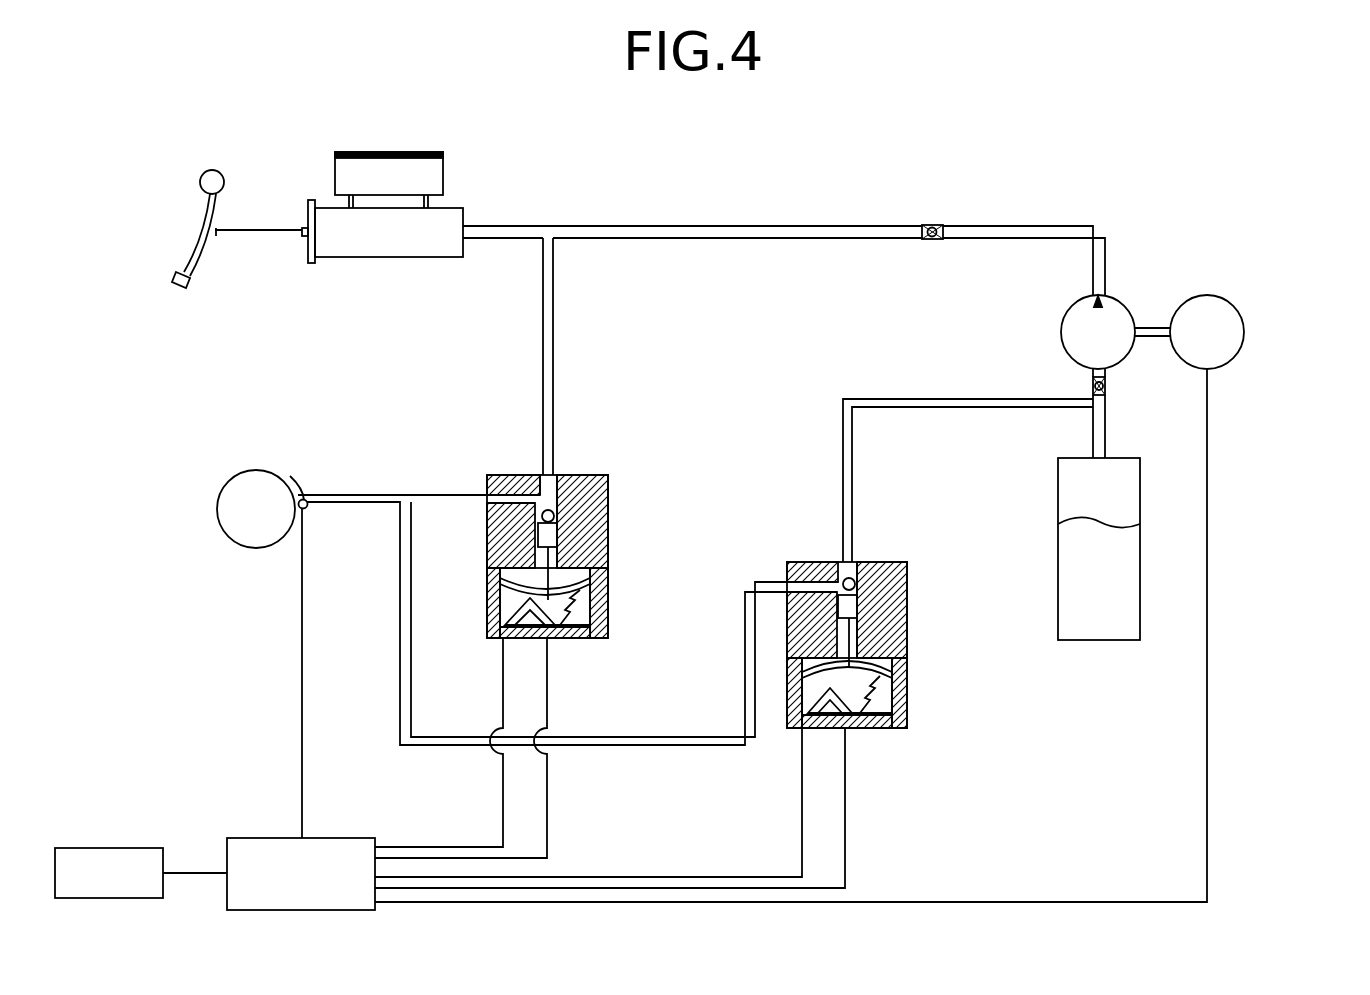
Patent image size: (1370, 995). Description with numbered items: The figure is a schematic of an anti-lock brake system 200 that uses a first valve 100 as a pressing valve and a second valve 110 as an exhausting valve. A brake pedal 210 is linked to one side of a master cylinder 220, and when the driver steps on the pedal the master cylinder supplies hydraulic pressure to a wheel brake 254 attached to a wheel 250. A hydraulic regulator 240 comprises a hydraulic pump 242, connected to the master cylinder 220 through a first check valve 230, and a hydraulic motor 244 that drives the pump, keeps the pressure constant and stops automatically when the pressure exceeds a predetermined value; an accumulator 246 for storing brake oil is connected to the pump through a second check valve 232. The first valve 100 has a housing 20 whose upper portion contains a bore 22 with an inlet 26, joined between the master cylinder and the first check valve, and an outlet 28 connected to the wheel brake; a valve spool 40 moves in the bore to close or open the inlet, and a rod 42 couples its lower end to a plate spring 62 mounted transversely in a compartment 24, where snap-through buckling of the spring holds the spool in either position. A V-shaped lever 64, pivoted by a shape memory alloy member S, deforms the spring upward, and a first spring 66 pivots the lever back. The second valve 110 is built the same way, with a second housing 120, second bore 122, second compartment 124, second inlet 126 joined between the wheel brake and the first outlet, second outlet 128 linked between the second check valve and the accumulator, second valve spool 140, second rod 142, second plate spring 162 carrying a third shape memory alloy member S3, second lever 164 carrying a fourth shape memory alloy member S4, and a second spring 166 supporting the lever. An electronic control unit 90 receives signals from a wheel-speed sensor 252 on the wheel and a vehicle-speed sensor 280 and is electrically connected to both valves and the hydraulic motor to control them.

The housing 20 is at (608, 478).
The bore 22 is at (585, 475).
The compartment 24 is at (590, 580).
The inlet 26 is at (532, 476).
The outlet 28 is at (505, 497).
The valve spool 40 is at (560, 525).
The rod 42 is at (500, 585).
The plate spring 62 is at (600, 598).
The V-shaped lever 64 is at (520, 645).
The first spring 66 is at (590, 635).
The solenoid S is at (570, 640).
The fourth shape memory alloy member S4 is at (490, 612).
The third shape memory alloy member S3 is at (895, 730).
The electronic control unit 90 is at (260, 840).
The first valve 100 is at (542, 620).
The second valve 110 is at (968, 480).
The second housing 120 is at (910, 570).
The second bore 122 is at (905, 590).
The second compartment 124 is at (905, 690).
The second inlet 126 is at (812, 588).
The second outlet 128 is at (856, 574).
The second valve spool 140 is at (858, 612).
The second rod 142 is at (858, 645).
The second plate spring 162 is at (785, 725).
The second lever 164 is at (855, 730).
The second spring 166 is at (905, 705).
The anti-lock brake system 200 is at (382, 170).
The brake pedal 210 is at (205, 200).
The master cylinder 220 is at (442, 182).
The first check valve 230 is at (930, 225).
The second check valve 232 is at (1108, 398).
The hydraulic regulator 240 is at (1215, 300).
The hydraulic pump 242 is at (1065, 325).
The hydraulic motor 244 is at (1230, 360).
The accumulator 246 is at (1127, 598).
The wheel 250 is at (222, 492).
The wheel-speed sensor 252 is at (307, 510).
The wheel brake 254 is at (296, 472).
The vehicle-speed sensor 280 is at (112, 855).